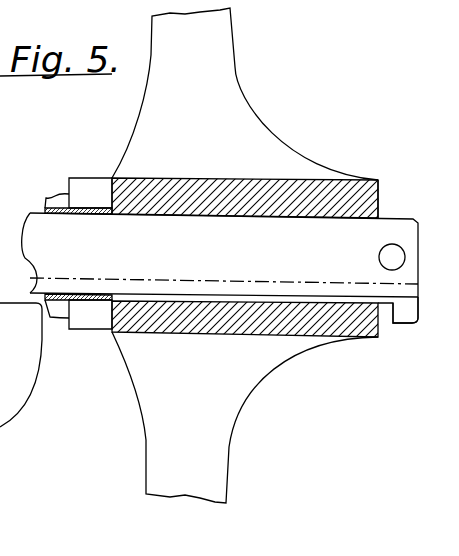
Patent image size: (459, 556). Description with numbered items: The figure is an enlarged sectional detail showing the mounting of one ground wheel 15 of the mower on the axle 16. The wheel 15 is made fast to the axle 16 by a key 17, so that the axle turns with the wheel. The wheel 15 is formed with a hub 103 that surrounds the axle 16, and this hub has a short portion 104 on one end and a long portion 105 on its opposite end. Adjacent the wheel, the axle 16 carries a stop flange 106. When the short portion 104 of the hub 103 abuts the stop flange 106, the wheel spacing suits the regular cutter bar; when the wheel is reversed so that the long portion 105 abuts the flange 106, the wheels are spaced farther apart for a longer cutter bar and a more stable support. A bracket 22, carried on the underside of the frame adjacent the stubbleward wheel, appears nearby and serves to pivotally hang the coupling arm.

The ground wheel 15 is at (231, 428).
The axle 16 is at (283, 260).
The key 17 is at (403, 318).
The bracket 22 is at (0, 470).
The hub 103 is at (230, 188).
The short portion 104 is at (100, 331).
The long portion 105 is at (360, 193).
The stop flange 106 is at (90, 183).